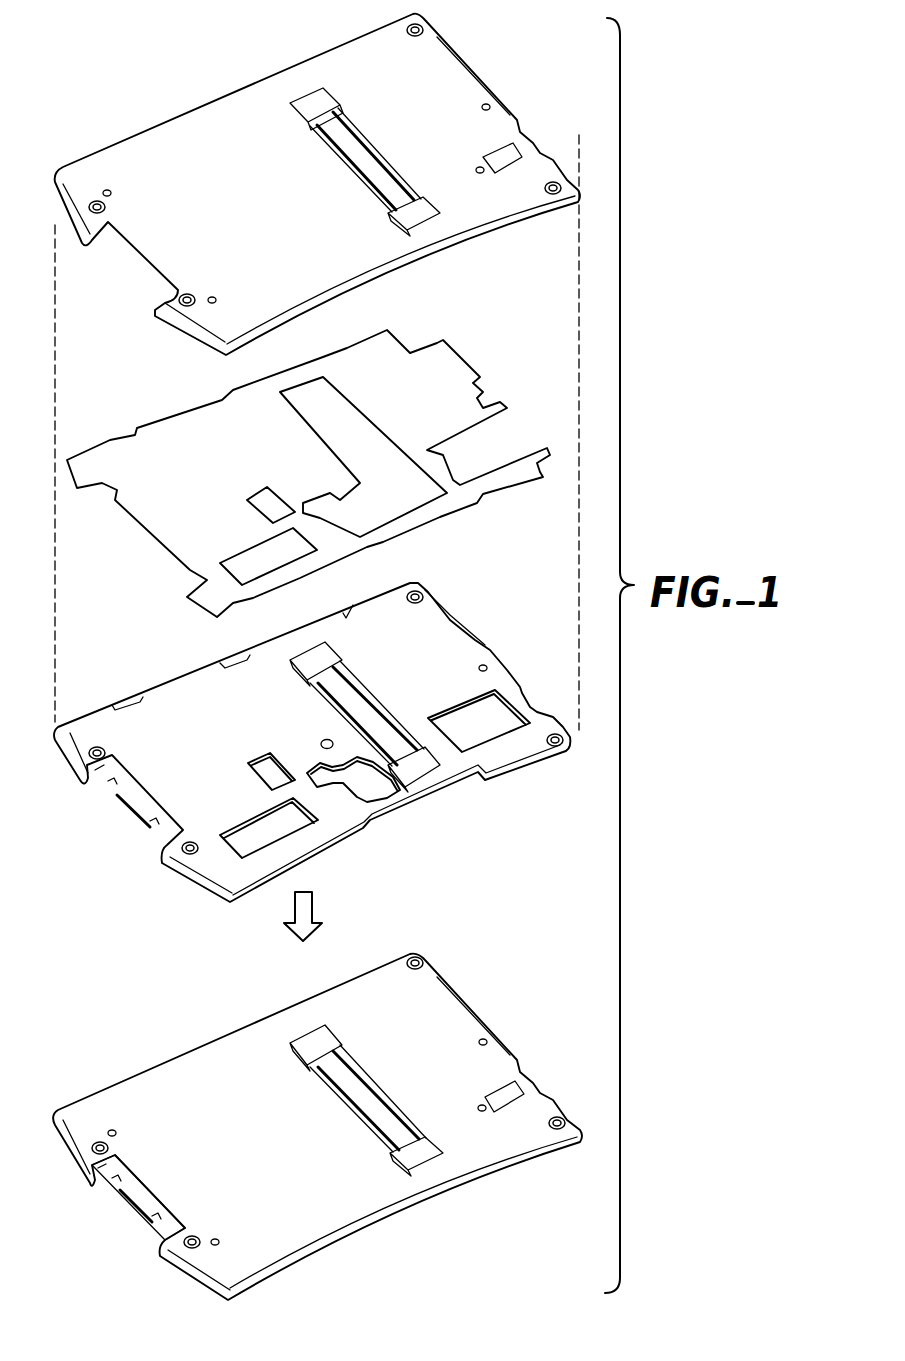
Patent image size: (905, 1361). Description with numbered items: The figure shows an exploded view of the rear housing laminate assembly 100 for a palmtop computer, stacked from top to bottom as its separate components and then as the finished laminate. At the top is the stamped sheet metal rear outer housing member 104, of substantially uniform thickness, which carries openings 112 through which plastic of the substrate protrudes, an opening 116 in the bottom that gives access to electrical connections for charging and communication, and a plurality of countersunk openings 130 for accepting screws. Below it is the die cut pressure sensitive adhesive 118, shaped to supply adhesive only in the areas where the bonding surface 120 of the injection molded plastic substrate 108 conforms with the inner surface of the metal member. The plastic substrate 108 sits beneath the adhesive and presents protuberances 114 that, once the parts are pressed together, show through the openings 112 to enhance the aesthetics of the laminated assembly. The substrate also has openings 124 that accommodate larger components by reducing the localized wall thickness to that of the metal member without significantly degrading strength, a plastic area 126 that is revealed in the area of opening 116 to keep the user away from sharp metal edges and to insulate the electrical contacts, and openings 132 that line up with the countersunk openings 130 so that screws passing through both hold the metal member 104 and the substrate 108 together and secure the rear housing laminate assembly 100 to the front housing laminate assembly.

The rear housing laminate assembly 100 is at (378, 1245).
The metal rear outer housing member 104 is at (317, 184).
The plastic substrate 108 is at (312, 742).
The openings 112 is at (308, 103).
The protuberances 114 is at (300, 656).
The opening 116 is at (140, 256).
The die cut adhesive 118 is at (308, 473).
The bonding surface 120 is at (458, 632).
The openings 124 is at (470, 748).
The plastic area 126 is at (142, 1198).
The countersunk openings 130 is at (425, 23).
The openings 132 is at (422, 592).